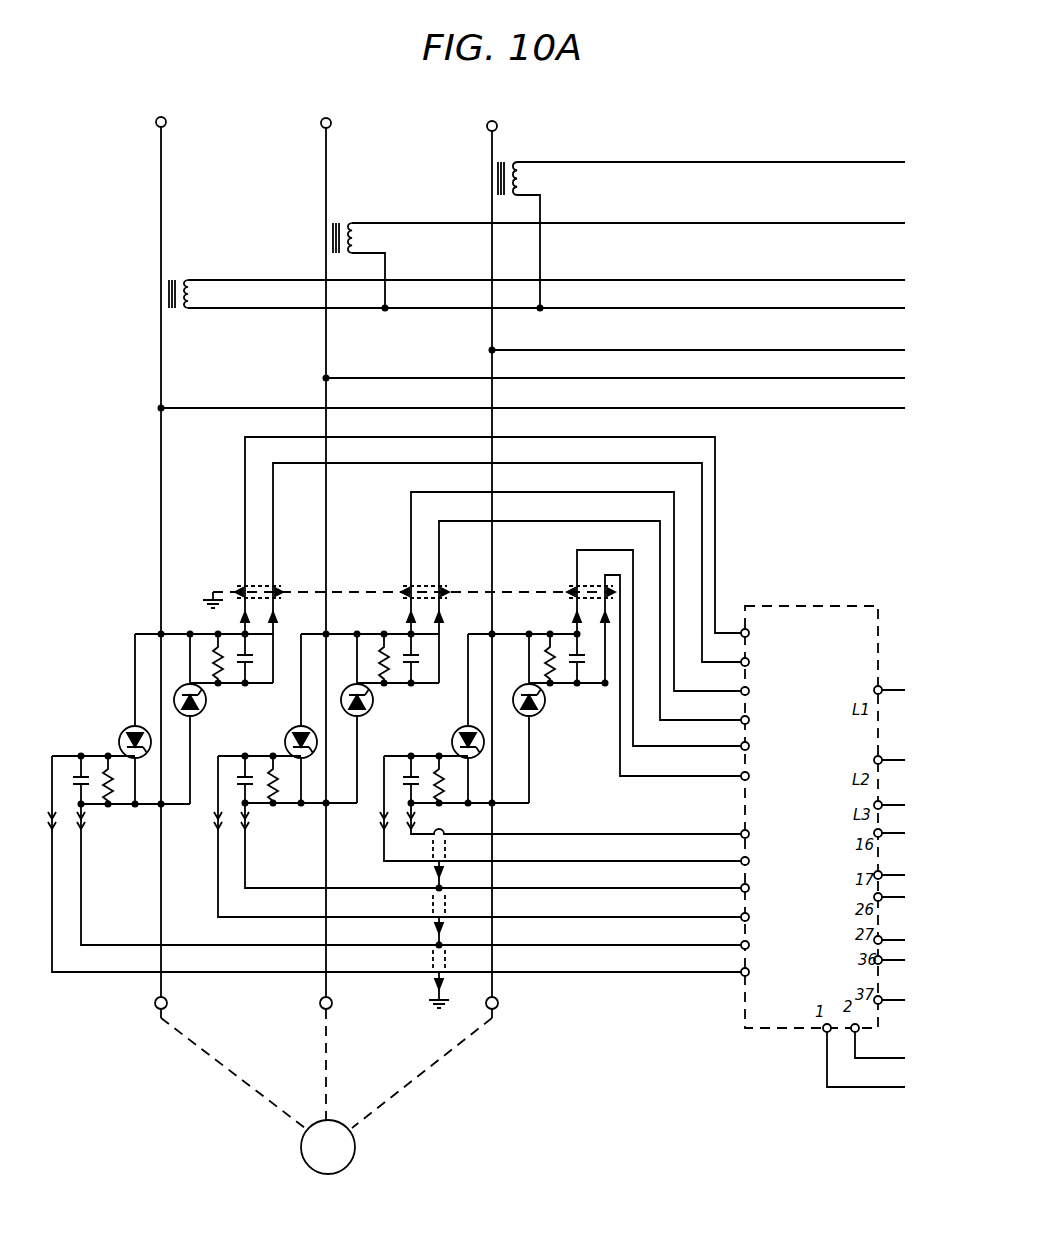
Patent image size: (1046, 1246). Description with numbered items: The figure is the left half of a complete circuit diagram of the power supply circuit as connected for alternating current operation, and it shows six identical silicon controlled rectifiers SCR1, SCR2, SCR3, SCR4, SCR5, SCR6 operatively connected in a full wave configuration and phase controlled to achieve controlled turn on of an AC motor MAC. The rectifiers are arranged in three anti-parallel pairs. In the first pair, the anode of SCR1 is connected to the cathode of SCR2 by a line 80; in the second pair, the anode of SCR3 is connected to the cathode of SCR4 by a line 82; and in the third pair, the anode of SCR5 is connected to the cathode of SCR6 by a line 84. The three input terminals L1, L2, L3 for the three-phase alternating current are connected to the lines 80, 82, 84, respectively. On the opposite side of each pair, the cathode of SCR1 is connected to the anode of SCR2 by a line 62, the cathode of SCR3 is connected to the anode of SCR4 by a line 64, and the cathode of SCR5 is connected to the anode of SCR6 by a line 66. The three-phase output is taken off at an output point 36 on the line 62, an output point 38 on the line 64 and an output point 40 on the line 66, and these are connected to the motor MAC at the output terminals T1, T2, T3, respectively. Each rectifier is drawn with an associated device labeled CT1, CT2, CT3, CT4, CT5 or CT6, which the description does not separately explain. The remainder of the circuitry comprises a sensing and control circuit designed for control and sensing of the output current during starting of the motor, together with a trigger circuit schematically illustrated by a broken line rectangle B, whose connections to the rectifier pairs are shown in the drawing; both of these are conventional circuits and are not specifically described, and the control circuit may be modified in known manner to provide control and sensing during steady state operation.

The line 80 is at (135, 655).
The line 82 is at (322, 604).
The line 84 is at (480, 604).
The line 62 is at (190, 742).
The line 64 is at (357, 742).
The line 66 is at (529, 753).
The output point 36 is at (161, 804).
The output point 38 is at (326, 803).
The output point 40 is at (495, 803).
The silicon controlled rectifier SCR1 is at (120, 738).
The silicon controlled rectifier SCR2 is at (205, 693).
The silicon controlled rectifier SCR3 is at (319, 760).
The silicon controlled rectifier SCR4 is at (345, 692).
The silicon controlled rectifier SCR5 is at (478, 756).
The silicon controlled rectifier SCR6 is at (516, 692).
The current transformer CT1 is at (138, 758).
The current transformer CT2 is at (187, 689).
The current transformer CT3 is at (285, 742).
The current transformer CT4 is at (371, 691).
The current transformer CT5 is at (453, 748).
The current transformer CT6 is at (545, 692).
The input terminal L1 is at (530, 448).
The input terminal L2 is at (612, 448).
The input terminal L3 is at (695, 449).
The output terminal T1 is at (230, 1062).
The output terminal T2 is at (343, 1058).
The output terminal T3 is at (444, 1062).
The AC motor MAC is at (355, 1155).
The trigger circuit B is at (770, 1028).